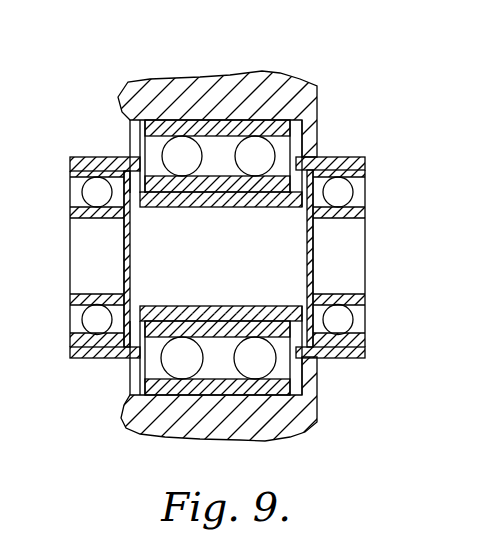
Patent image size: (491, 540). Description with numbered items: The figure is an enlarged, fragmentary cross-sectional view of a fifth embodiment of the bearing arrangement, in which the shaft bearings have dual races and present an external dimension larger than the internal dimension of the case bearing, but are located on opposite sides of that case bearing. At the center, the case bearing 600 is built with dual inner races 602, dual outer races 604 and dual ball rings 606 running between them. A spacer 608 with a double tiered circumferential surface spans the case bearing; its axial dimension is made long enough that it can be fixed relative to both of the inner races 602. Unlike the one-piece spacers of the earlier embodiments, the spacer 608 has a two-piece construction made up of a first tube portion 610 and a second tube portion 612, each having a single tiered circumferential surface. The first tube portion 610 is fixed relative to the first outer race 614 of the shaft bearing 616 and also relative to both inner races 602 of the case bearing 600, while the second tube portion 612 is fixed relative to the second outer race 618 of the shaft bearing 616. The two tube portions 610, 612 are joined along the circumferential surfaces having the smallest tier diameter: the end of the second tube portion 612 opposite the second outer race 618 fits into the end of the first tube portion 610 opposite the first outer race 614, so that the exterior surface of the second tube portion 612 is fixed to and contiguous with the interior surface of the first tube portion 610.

The case bearing 600 is at (245, 270).
The inner races 602 is at (217, 180).
The outer races 604 is at (238, 383).
The ball rings 606 is at (218, 378).
The spacer 608 is at (284, 300).
The first tube portion 610 is at (96, 163).
The second tube portion 612 is at (340, 355).
The first outer race 614 is at (74, 172).
The shaft bearing 616 is at (381, 190).
The second outer race 618 is at (360, 340).